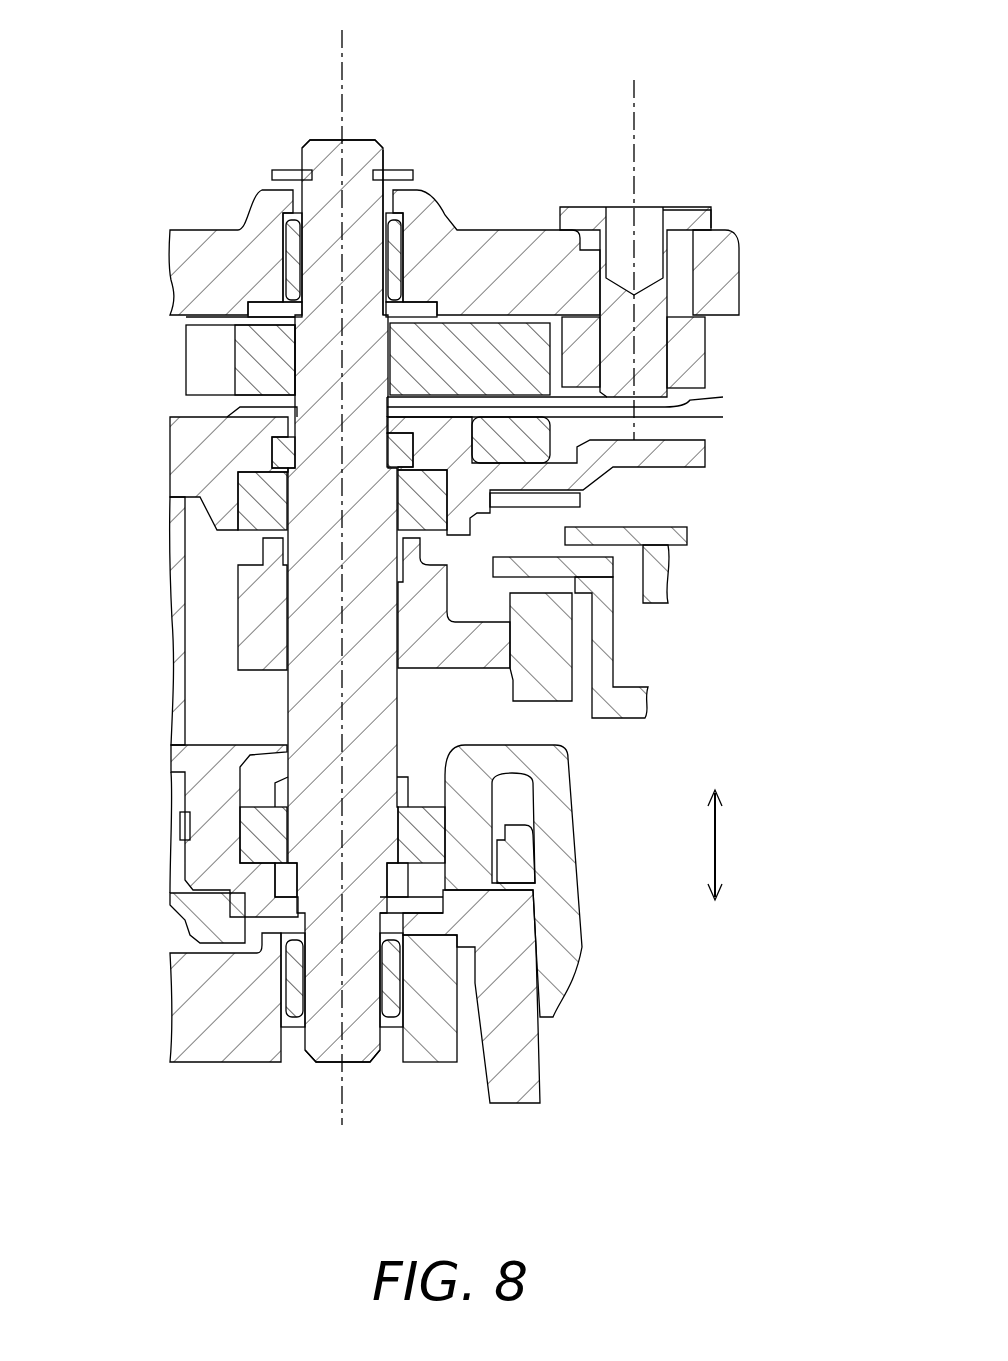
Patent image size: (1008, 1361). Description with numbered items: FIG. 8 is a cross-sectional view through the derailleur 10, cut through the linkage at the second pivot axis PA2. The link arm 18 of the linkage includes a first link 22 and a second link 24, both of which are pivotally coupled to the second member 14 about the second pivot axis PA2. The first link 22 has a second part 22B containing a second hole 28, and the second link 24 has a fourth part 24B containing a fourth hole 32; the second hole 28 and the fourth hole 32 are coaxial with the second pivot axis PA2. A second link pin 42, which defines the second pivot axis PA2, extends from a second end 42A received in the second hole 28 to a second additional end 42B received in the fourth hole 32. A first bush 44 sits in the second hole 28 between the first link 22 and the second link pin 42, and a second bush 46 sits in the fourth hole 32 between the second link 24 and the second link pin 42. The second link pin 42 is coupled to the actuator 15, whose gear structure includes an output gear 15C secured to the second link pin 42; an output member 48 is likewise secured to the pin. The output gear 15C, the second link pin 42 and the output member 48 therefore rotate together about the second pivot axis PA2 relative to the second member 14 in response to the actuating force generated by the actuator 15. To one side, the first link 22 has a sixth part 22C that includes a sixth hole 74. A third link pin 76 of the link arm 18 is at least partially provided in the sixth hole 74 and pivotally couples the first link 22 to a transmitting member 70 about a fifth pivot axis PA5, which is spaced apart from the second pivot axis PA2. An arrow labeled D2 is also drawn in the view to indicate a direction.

The derailleur 10 is at (774, 126).
The second member 14 is at (535, 1110).
The actuator 15 is at (714, 525).
The output gear 15C is at (537, 636).
The link arm 18 is at (161, 229).
The first link 22 is at (166, 270).
The second part 22B is at (432, 263).
The sixth part 22C is at (720, 287).
The second link 24 is at (168, 1005).
The fourth part 24B is at (427, 1037).
The second hole 28 is at (367, 263).
The fourth hole 32 is at (383, 975).
The second link pin 42 is at (377, 500).
The second end 42A is at (328, 207).
The second additional end 42B is at (325, 1037).
The first bush 44 is at (293, 258).
The second bush 46 is at (290, 975).
The output member 48 is at (488, 357).
The transmitting member 70 is at (703, 350).
The sixth hole 74 is at (578, 267).
The third link pin 76 is at (680, 246).
The second pivot axis PA2 is at (342, 47).
The fifth pivot axis PA5 is at (634, 106).
The axial direction D2 is at (720, 822).